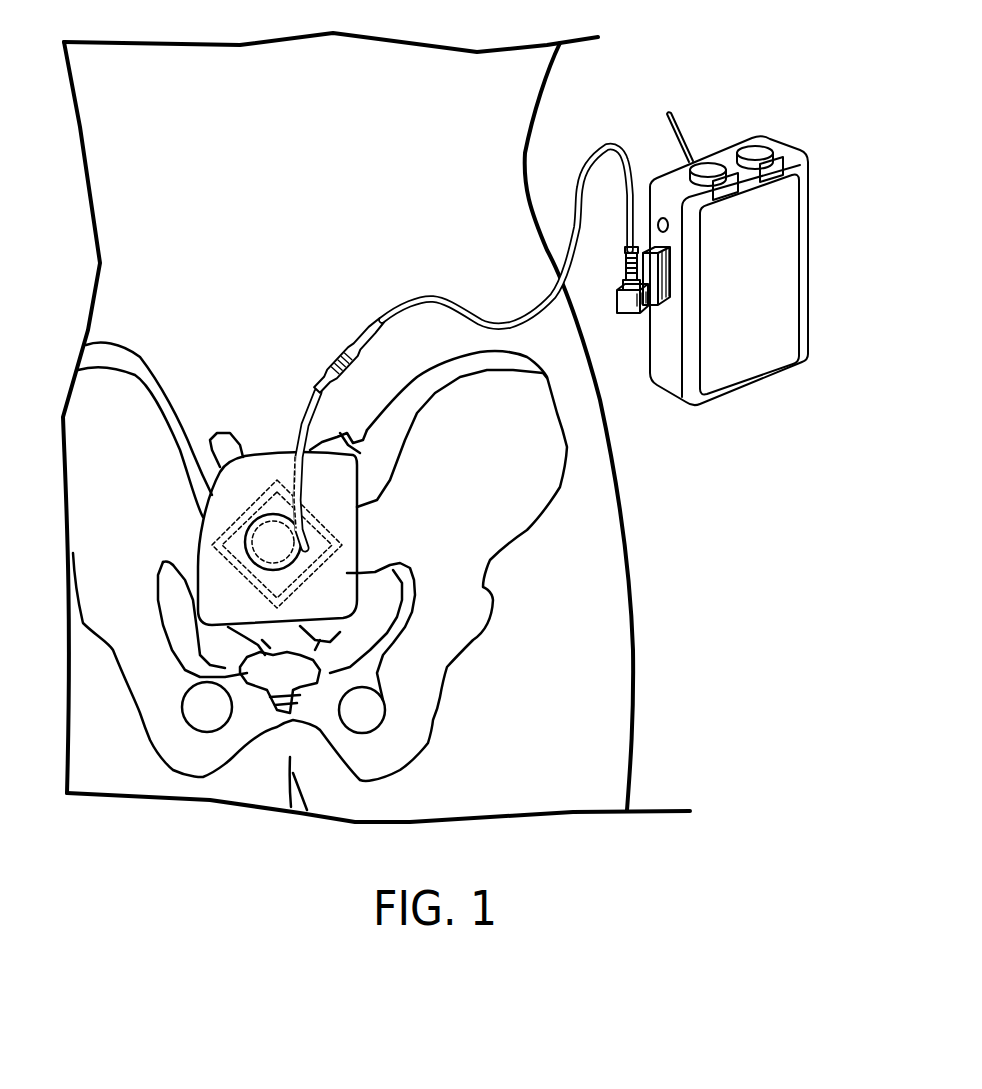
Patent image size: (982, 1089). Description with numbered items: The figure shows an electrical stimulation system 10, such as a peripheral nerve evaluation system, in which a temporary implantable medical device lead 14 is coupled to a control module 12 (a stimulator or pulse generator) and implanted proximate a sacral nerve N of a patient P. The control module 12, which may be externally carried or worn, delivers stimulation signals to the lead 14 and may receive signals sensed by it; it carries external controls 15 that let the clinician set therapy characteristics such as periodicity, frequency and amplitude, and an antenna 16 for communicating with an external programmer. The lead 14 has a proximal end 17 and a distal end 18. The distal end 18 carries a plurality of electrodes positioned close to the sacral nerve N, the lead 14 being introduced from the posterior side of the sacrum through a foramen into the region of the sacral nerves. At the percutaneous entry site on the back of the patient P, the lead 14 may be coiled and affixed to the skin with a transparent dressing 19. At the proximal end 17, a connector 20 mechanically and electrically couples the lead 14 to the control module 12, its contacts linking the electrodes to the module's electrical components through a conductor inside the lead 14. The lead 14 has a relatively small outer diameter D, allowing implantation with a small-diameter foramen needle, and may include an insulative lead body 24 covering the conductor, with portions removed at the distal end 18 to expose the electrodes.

The electrical stimulation system 10 is at (732, 214).
The control module 12 is at (787, 278).
The temporary implantable medical device lead 14 is at (410, 300).
The external controls 15 is at (803, 165).
The antenna 16 is at (690, 131).
The proximal end 17 is at (638, 321).
The distal end 18 is at (240, 578).
The transparent dressing 19 is at (342, 566).
The connector 20 is at (662, 273).
The lead body 24 is at (487, 310).
The patient P is at (97, 120).
The sacral nerve N is at (228, 604).
The outer diameter D is at (338, 432).